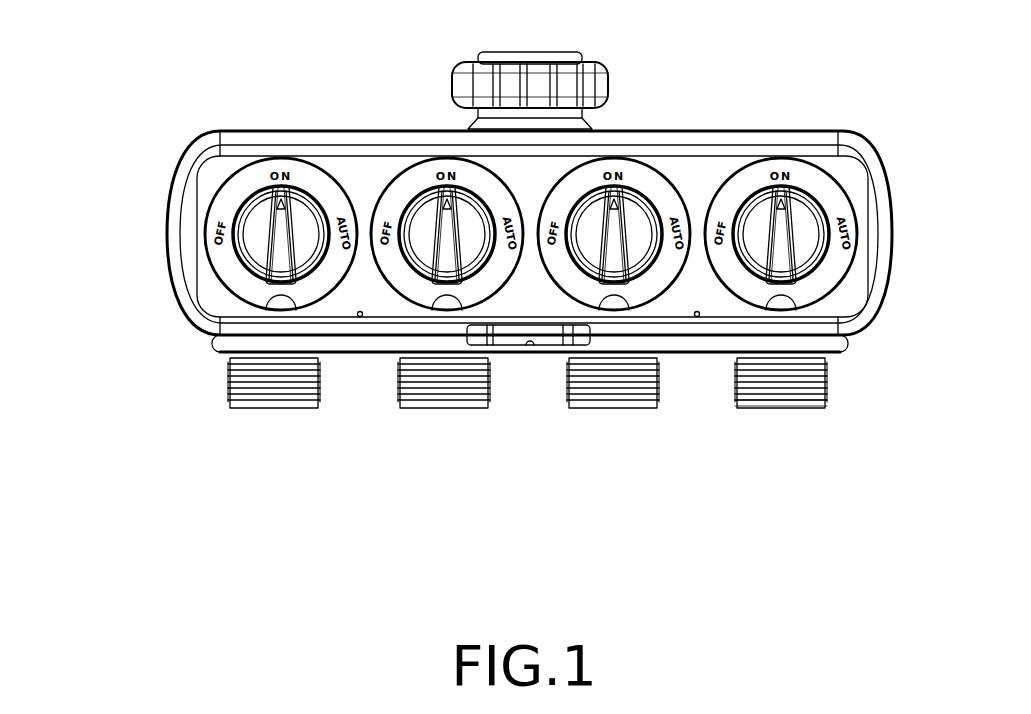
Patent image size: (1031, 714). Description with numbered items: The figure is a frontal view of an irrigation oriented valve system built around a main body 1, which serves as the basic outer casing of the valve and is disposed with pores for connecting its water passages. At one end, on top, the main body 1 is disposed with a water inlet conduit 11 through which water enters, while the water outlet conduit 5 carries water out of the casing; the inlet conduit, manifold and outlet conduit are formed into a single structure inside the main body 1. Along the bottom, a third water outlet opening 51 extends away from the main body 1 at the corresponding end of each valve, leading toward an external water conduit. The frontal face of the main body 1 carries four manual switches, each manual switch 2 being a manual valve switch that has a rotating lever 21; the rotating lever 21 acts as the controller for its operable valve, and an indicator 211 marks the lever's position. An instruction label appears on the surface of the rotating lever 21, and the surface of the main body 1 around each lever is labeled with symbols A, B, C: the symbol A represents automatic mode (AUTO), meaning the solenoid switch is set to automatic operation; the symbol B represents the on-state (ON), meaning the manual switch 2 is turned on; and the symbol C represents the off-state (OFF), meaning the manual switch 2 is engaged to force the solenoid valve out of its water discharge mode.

The main body 1 is at (228, 131).
The water inlet conduit 11 is at (583, 56).
The manual switch 2 is at (207, 205).
The rotating lever 21 is at (780, 240).
The indicator 211 is at (790, 200).
The water outlet conduit 5 is at (232, 385).
The third water outlet opening 51 is at (815, 414).
The automatic mode symbol A is at (857, 238).
The on-state symbol B is at (785, 187).
The off-state symbol C is at (720, 254).